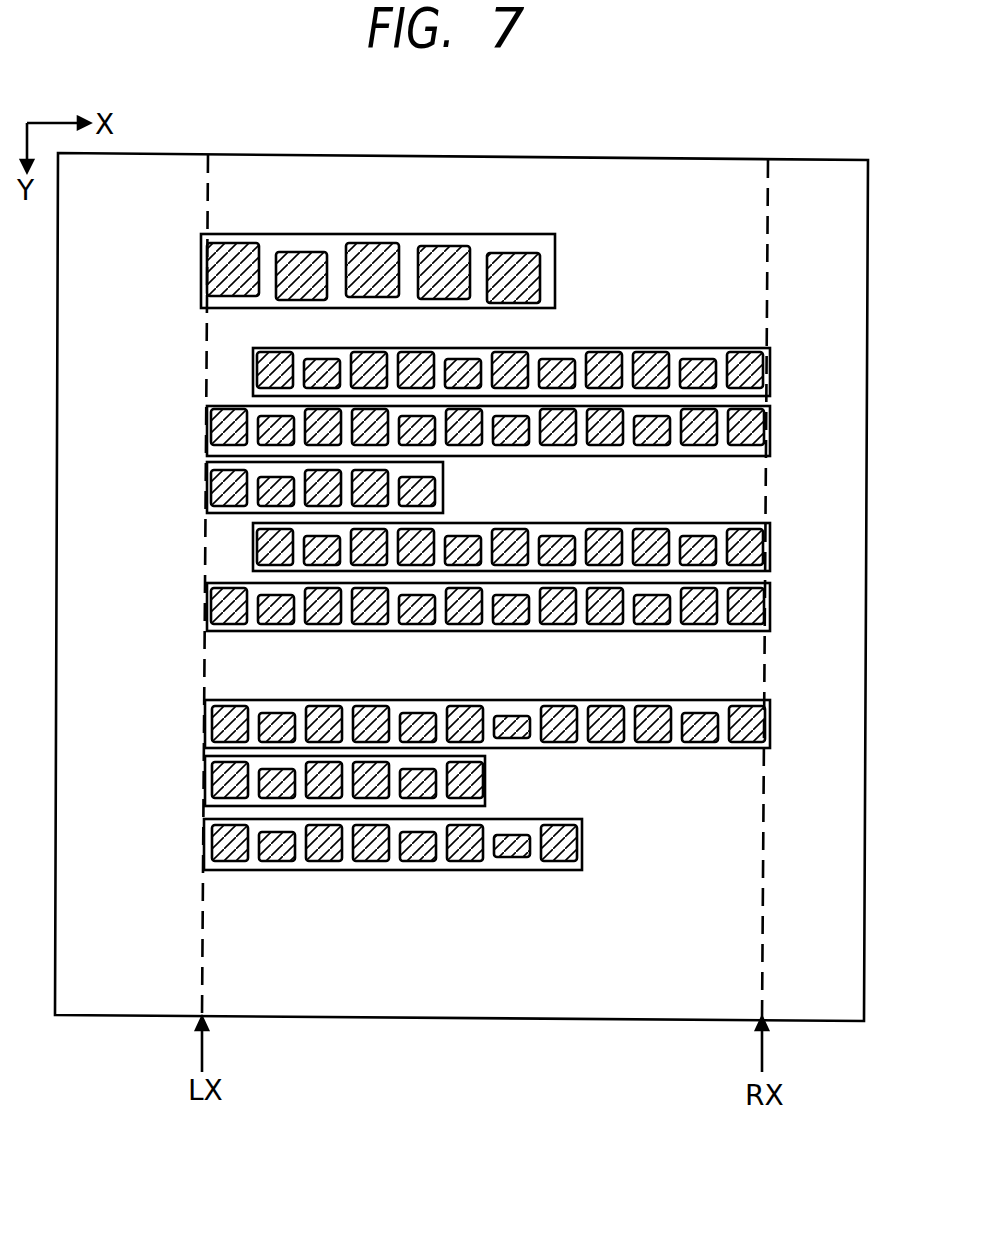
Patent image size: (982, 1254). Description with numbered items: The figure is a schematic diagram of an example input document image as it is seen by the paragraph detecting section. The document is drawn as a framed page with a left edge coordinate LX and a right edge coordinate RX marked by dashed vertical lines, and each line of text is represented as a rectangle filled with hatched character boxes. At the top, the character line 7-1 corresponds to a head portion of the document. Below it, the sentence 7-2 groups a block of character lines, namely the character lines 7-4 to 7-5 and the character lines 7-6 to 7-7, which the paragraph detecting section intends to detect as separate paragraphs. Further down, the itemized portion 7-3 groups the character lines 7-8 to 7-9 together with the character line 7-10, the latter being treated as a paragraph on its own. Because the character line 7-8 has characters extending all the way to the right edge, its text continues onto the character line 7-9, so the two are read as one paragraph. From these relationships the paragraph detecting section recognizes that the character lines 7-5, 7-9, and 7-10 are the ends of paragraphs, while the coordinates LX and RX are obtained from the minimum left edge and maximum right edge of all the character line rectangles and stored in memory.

The character line 7-1 is at (556, 277).
The sentence 7-2 is at (488, 490).
The itemized portion 7-3 is at (489, 787).
The character line 7-4 is at (253, 374).
The character line 7-5 is at (207, 481).
The character line 7-6 is at (253, 547).
The character line 7-7 is at (207, 605).
The character line 7-8 is at (205, 722).
The character line 7-9 is at (205, 780).
The character line 7-10 is at (204, 841).